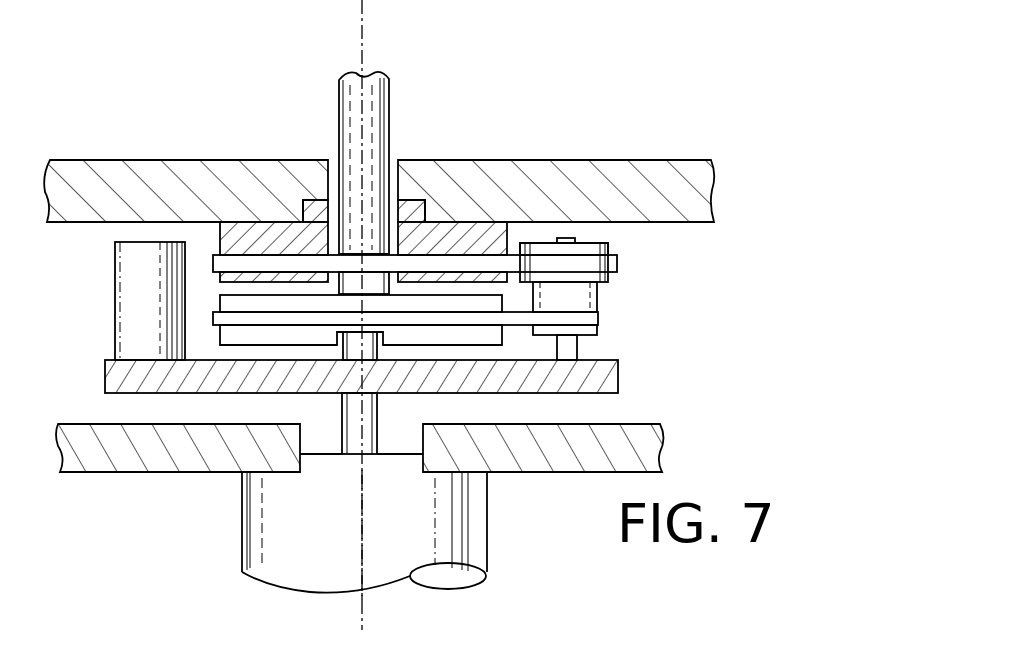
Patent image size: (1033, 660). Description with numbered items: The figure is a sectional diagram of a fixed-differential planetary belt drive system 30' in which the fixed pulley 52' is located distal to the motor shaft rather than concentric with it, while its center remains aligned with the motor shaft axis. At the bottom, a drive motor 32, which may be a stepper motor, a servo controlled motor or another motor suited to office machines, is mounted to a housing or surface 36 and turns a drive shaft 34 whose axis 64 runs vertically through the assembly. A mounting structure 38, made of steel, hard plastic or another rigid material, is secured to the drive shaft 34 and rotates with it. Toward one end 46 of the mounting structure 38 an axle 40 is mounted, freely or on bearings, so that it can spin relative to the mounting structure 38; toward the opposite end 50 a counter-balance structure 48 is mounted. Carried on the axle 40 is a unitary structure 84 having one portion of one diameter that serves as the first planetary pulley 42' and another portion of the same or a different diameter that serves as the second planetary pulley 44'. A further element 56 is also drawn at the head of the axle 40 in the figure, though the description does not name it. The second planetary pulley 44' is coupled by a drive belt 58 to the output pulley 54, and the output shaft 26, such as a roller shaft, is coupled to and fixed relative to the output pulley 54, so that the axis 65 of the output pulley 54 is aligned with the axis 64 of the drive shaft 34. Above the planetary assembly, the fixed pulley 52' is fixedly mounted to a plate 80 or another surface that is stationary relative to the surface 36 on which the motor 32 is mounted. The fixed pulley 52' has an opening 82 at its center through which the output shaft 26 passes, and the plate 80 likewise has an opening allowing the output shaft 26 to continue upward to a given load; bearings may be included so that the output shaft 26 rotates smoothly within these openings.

The axis of the output pulley 65 is at (363, 33).
The axis of motor shaft 64 is at (363, 520).
The plate 80 is at (570, 160).
The fixed pulley 52' is at (282, 241).
The output shaft 26 is at (389, 118).
The opening 82 is at (330, 150).
The fixed-differential planetary belt drive system 30' is at (718, 35).
The second planetary pulley 44' is at (473, 303).
The output pulley 54 is at (477, 345).
The first planetary pulley 42' is at (609, 212).
The bolt head 56 is at (613, 263).
The unitary structure 84 is at (623, 282).
The drive belt 58 is at (598, 318).
The axle 40 is at (578, 352).
The counter-balance structure 48 is at (115, 283).
The one end of the mounting structure 46 is at (618, 383).
The opposite end of the mounting structure 50 is at (105, 367).
The mounting structure 38 is at (522, 398).
The drive shaft 34 is at (378, 415).
The housing or surface 36 is at (665, 450).
The drive motor 32 is at (488, 525).